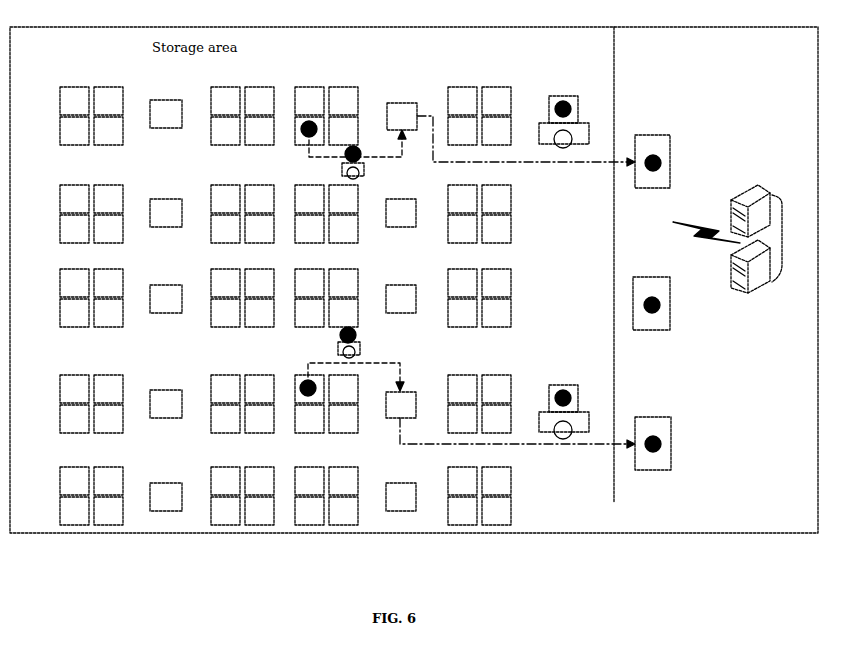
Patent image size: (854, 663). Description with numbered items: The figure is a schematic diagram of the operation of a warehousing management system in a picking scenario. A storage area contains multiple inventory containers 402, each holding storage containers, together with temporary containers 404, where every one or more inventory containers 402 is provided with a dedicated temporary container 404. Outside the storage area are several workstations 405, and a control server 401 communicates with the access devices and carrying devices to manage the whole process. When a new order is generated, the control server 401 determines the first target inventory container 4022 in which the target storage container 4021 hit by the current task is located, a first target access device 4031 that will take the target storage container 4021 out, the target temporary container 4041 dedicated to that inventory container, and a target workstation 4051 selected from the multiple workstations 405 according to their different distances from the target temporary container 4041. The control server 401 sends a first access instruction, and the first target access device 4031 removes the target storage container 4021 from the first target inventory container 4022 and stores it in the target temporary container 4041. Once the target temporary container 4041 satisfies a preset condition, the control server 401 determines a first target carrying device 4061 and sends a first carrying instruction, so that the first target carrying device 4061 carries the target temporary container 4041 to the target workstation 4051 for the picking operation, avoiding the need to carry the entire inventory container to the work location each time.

The control server 401 is at (782, 234).
The inventory container 402 is at (106, 87).
The temporary container 404 is at (152, 114).
The workstation 405 is at (670, 299).
The target storage container 4021 is at (309, 119).
The first target inventory container 4022 is at (296, 128).
The first target access device 4031 is at (342, 170).
The target temporary container 4041 is at (400, 102).
The target workstation 4051 is at (700, 145).
The first target carrying device 4061 is at (585, 123).